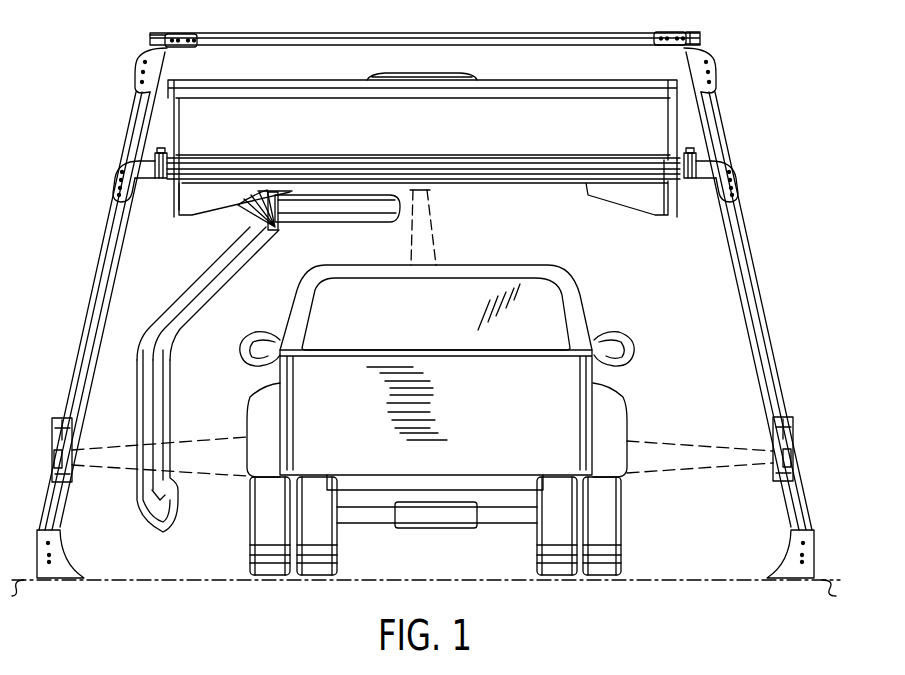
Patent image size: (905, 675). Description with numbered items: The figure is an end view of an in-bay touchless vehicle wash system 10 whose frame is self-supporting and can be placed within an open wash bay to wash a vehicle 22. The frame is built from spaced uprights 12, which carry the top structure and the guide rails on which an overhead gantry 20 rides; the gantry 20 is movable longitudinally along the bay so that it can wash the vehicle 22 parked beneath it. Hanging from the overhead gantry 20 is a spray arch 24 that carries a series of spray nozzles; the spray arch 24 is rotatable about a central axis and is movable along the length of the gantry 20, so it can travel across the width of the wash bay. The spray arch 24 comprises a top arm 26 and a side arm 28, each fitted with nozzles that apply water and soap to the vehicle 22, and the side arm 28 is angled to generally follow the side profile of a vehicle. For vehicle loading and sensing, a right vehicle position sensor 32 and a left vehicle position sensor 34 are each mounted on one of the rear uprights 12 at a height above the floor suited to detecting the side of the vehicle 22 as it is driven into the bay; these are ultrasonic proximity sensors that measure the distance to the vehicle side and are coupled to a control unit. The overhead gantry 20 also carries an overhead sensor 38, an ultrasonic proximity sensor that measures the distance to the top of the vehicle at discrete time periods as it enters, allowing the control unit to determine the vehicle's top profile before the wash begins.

The vehicle wash system 10 is at (760, 209).
The uprights 12 is at (88, 298).
The overhead gantry 20 is at (563, 113).
The vehicle 22 is at (578, 302).
The spray arch 24 is at (158, 307).
The top arm 26 is at (345, 225).
The side arm 28 is at (174, 372).
The right vehicle position sensor 32 is at (794, 451).
The left vehicle position sensor 34 is at (52, 457).
The overhead sensor 38 is at (425, 188).